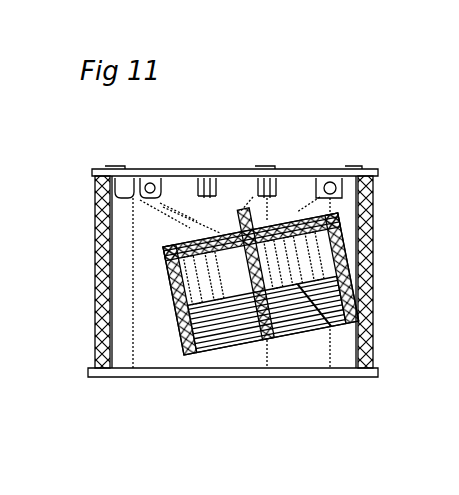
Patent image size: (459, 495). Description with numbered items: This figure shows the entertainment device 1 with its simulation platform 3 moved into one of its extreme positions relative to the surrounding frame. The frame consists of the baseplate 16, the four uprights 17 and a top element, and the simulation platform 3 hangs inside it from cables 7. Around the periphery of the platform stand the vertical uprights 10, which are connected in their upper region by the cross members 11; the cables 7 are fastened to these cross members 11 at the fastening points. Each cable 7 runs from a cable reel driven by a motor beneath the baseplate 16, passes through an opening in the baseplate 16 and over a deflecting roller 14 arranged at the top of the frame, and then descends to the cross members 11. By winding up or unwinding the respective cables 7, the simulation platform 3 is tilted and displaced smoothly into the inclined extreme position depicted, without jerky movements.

The entertainment device 1 is at (294, 136).
The simulation platform 3 is at (157, 241).
The cables 7 is at (165, 198).
The vertical uprights 10 is at (175, 306).
The cross members 11 is at (226, 222).
The deflecting roller 14 is at (330, 168).
The baseplate 16 is at (242, 370).
The uprights 17 is at (98, 284).